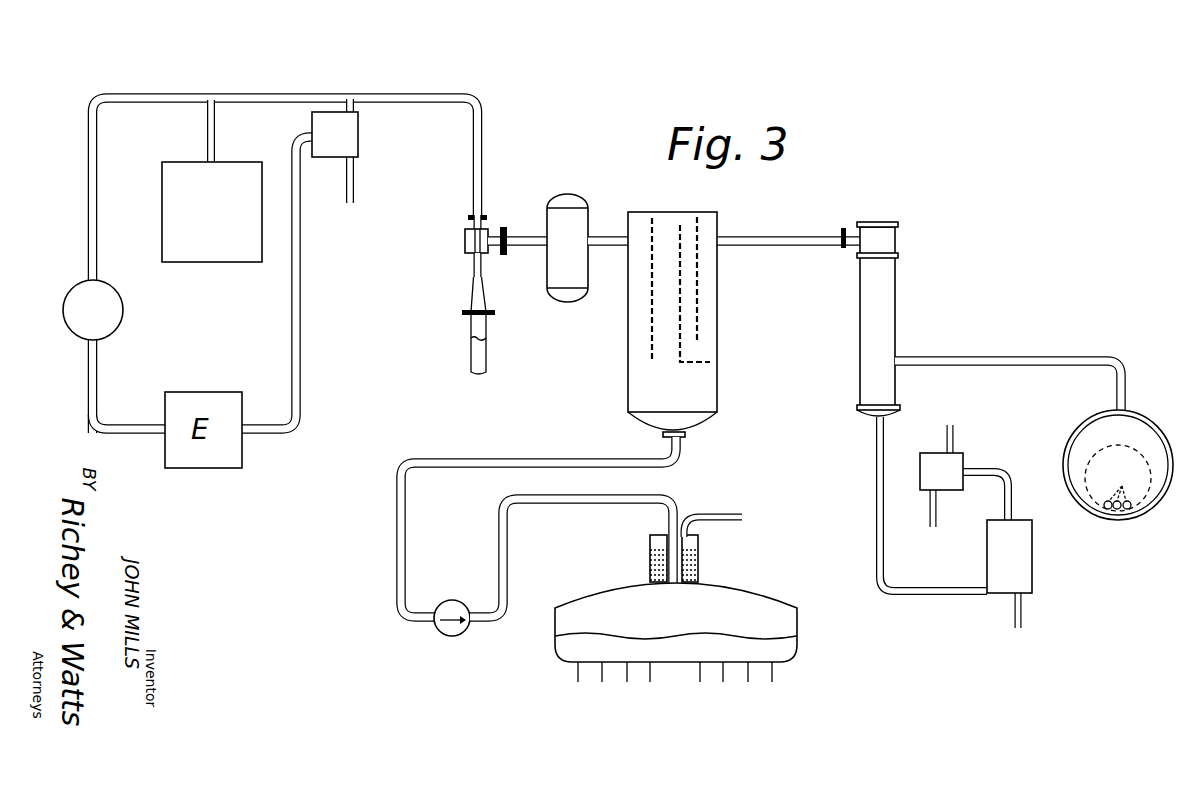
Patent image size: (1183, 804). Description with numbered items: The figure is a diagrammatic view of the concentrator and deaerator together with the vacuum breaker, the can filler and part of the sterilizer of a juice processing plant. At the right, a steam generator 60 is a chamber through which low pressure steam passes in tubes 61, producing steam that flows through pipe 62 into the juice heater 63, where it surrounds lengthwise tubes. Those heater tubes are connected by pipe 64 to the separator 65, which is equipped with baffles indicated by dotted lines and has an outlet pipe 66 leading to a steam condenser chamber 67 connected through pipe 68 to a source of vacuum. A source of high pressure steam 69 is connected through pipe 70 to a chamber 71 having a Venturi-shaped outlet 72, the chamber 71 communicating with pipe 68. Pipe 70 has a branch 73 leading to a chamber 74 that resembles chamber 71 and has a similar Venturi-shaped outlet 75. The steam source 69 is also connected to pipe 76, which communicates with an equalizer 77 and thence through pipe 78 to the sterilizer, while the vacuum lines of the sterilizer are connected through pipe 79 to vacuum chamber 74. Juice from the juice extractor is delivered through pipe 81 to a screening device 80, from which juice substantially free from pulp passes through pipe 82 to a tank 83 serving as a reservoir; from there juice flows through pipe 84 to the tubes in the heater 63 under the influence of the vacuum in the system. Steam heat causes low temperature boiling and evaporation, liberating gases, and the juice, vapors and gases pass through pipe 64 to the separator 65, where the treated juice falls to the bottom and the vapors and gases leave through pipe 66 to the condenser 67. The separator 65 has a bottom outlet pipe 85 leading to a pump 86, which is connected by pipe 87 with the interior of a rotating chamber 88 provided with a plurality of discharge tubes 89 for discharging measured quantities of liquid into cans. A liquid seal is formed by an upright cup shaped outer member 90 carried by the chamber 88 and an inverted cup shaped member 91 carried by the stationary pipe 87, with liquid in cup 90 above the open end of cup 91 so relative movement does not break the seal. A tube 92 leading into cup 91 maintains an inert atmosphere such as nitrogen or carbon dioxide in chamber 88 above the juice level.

The steam generator 60 is at (1118, 465).
The tubes 61 is at (1118, 478).
The pipe 62 is at (995, 356).
The juice heater 63 is at (870, 308).
The pipe 64 is at (750, 237).
The separator 65 is at (717, 223).
The outlet pipe 66 is at (607, 240).
The steam condenser chamber 67 is at (571, 199).
The pipe 68 is at (510, 232).
The source of high pressure steam 69 is at (212, 181).
The pipe 70 is at (262, 98).
The chamber 71 is at (465, 240).
The Venturi-shaped outlet 72 is at (472, 285).
The branch 73 is at (354, 98).
The chamber 74 is at (338, 138).
The Venturi-shaped outlet 75 is at (356, 177).
The pipe 76 is at (123, 95).
The equalizer 77 is at (105, 310).
The pipe 78 is at (106, 425).
The pipe 79 is at (301, 288).
The screening device 80 is at (953, 467).
The pipe 81 is at (952, 435).
The pipe 82 is at (1012, 482).
The tank 83 is at (1003, 543).
The pipe 84 is at (941, 587).
The bottom outlet pipe 85 is at (465, 463).
The pump 86 is at (457, 627).
The pipe 87 is at (508, 558).
The chamber 88 is at (740, 592).
The discharge tubes 89 is at (773, 670).
The upright cup shaped outer member 90 is at (698, 552).
The inverted cup shaped member 91 is at (662, 535).
The tube 92 is at (717, 515).